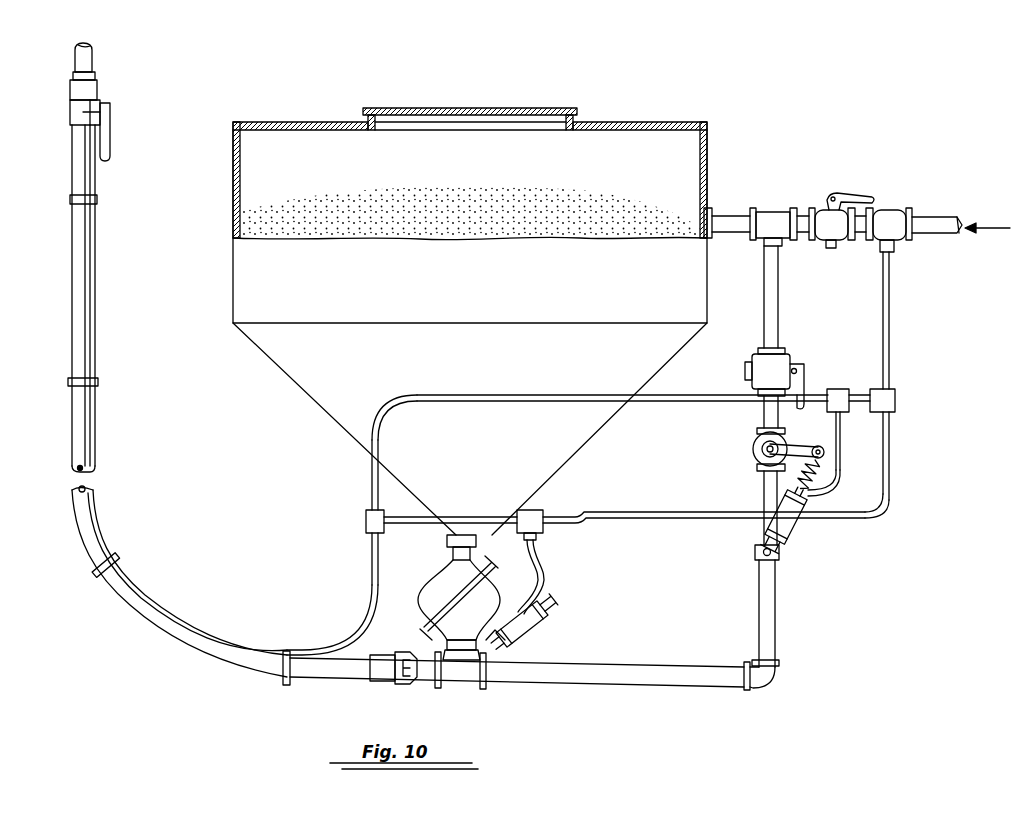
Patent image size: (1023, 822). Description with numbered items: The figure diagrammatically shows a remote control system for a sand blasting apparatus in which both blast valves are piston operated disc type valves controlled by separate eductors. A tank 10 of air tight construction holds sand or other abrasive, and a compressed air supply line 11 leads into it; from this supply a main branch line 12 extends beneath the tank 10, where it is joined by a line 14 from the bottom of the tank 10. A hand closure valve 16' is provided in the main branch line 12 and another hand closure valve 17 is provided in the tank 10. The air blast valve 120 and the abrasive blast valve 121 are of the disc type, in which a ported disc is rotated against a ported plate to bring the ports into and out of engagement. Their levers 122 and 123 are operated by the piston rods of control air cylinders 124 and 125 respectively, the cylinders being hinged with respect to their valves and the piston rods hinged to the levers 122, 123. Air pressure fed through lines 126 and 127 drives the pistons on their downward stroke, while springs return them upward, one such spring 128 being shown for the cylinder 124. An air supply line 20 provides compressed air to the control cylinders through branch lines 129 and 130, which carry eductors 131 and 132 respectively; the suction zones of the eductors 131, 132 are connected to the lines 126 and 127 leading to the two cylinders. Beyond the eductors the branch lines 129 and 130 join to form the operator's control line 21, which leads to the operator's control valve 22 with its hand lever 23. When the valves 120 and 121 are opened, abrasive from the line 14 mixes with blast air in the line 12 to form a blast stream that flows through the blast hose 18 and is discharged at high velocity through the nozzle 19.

The tank 10 is at (431, 284).
The compressed air supply line 11 is at (926, 220).
The main branch line 12 is at (773, 274).
The line from the bottom of the tank 14 is at (452, 551).
The hand closure valve 16' is at (783, 364).
The hand closure valve 17 is at (836, 222).
The blast hose 18 is at (80, 530).
The nozzle 19 is at (93, 58).
The air supply line 20 is at (889, 313).
The operator's control line 21 is at (93, 454).
The operator's control valve 22 is at (97, 114).
The hand lever 23 is at (109, 142).
The air blast valve 120 is at (781, 440).
The abrasive blast valve 121 is at (432, 580).
The lever 122 is at (790, 458).
The lever 123 is at (477, 646).
The control air cylinder 124 is at (796, 530).
The control air cylinder 125 is at (541, 629).
The line 126 is at (841, 462).
The line 127 is at (541, 556).
The spring 128 is at (822, 486).
The branch line 129 is at (490, 394).
The branch line 130 is at (410, 518).
The eductor 131 is at (839, 390).
The eductor 132 is at (545, 515).